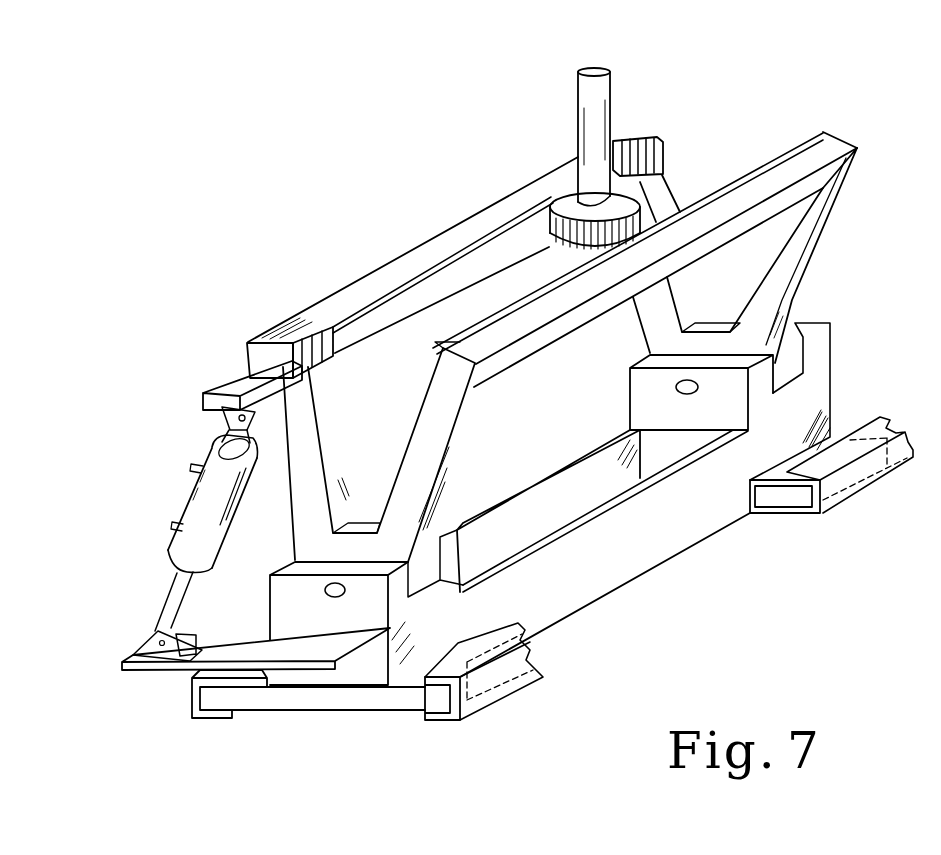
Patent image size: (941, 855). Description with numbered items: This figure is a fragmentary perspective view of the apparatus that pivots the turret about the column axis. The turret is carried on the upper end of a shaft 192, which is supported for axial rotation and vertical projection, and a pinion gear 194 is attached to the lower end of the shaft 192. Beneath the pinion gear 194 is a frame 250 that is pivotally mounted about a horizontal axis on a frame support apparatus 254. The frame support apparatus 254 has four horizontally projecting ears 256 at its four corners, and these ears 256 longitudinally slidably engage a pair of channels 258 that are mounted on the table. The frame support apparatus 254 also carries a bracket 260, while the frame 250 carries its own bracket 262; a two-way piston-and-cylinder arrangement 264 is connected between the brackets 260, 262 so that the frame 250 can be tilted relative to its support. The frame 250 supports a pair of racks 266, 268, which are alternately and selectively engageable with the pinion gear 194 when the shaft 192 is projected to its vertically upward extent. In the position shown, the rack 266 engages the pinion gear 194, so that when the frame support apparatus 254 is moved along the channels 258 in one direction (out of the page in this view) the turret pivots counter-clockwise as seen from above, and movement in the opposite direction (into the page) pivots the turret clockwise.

The shaft 192 is at (560, 110).
The pinion gear 194 is at (566, 205).
The frame 250 is at (196, 352).
The frame support apparatus 254 is at (642, 556).
The ears 256 is at (207, 712).
The channels 258 is at (198, 684).
The bracket 260 is at (313, 668).
The bracket 262 is at (205, 402).
The two-way piston-and-cylinder arrangement 264 is at (176, 499).
The rack 266 is at (318, 330).
The rack 268 is at (432, 340).